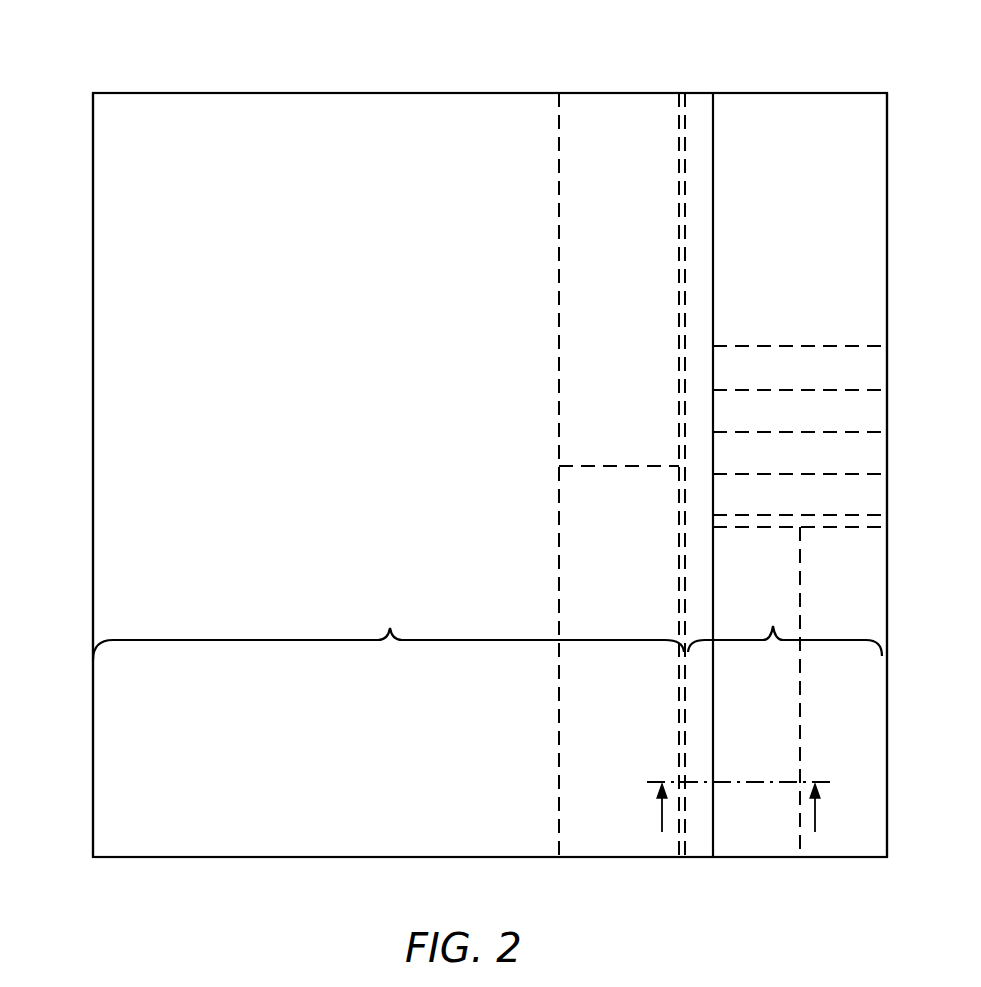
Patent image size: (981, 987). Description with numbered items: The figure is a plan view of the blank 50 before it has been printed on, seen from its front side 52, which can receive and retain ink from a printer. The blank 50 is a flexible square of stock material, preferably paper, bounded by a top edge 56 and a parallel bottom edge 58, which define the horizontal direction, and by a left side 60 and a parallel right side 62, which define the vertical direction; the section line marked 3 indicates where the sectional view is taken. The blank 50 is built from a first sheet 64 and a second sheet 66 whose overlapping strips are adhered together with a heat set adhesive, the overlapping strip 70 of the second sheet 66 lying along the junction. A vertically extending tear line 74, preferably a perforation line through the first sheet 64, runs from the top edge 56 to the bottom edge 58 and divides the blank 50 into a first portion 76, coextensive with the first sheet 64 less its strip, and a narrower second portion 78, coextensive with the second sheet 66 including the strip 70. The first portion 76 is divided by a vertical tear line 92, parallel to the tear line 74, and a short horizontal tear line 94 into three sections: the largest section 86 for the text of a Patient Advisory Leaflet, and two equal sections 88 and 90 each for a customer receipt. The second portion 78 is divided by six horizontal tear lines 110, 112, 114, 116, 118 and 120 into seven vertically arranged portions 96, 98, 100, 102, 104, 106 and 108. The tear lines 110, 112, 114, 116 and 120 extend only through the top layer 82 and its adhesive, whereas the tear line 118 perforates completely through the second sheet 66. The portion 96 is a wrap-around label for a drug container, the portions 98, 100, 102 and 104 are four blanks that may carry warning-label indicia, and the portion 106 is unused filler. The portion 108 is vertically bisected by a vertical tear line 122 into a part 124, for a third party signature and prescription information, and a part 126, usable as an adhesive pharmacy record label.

The blank 50 is at (128, 54).
The front side 52 is at (234, 138).
The top edge 56 is at (440, 93).
The bottom edge 58 is at (229, 857).
The left side 60 is at (93, 840).
The right side 62 is at (887, 838).
The first sheet 64 is at (197, 93).
The second sheet 66 is at (740, 90).
The overlapping strip 70 is at (705, 179).
The tear line 74 is at (679, 553).
The first portion 76 is at (388, 628).
The second portion 78 is at (785, 622).
The top layer 82 is at (806, 113).
The section 86 is at (327, 434).
The section 88 is at (640, 251).
The section 90 is at (640, 699).
The vertical tear line 92 is at (559, 283).
The horizontal tear line 94 is at (618, 466).
The portion 96 is at (813, 251).
The portion 98 is at (772, 384).
The portion 100 is at (780, 426).
The portion 102 is at (780, 468).
The portion 104 is at (780, 509).
The portion 106 is at (826, 527).
The portion 108 is at (864, 616).
The tear line 110 is at (790, 346).
The tear line 112 is at (804, 390).
The tear line 114 is at (804, 432).
The tear line 116 is at (804, 474).
The tear line 118 is at (804, 515).
The tear line 120 is at (779, 527).
The vertical tear line 122 is at (800, 700).
The part 124 is at (780, 754).
The part 126 is at (864, 754).
The section line 3- 3 is at (736, 810).